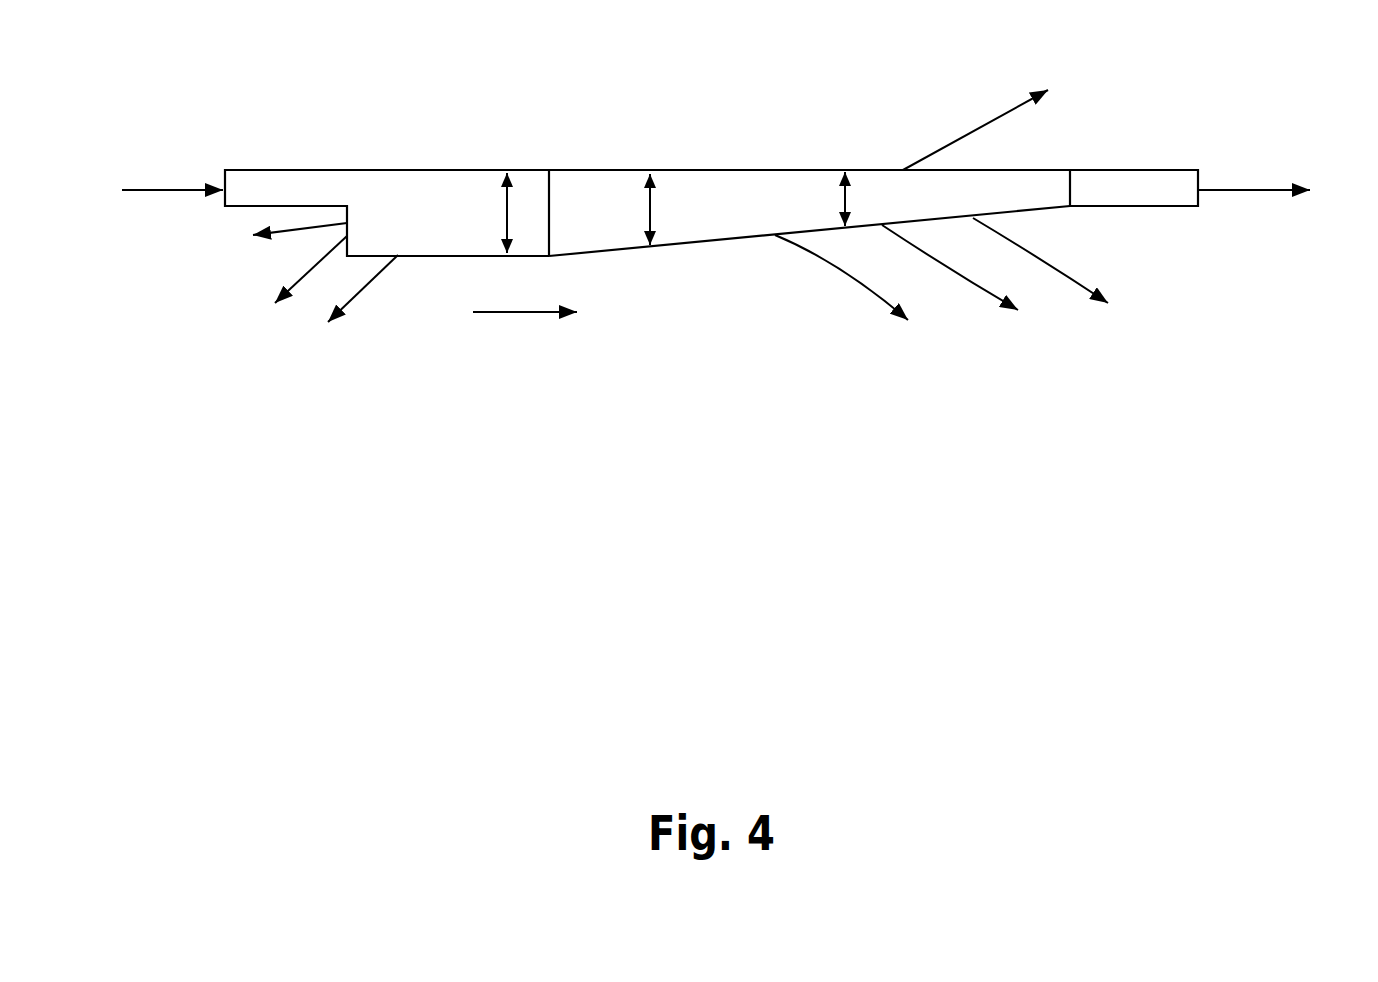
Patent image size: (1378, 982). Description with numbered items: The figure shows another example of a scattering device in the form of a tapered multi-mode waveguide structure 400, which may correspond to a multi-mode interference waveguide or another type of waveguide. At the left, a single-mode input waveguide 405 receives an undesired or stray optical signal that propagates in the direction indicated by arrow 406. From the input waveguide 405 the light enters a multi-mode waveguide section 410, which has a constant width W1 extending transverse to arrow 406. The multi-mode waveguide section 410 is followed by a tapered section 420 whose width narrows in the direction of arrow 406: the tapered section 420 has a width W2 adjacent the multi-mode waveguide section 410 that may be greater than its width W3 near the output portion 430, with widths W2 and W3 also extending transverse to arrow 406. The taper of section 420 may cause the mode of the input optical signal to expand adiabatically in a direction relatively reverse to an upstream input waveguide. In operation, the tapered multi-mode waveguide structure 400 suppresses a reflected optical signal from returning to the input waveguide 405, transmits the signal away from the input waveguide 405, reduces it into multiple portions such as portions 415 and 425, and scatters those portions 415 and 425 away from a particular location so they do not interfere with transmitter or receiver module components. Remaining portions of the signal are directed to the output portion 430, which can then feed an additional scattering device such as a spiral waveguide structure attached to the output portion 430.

The tapered multi-mode waveguide structure 400 is at (671, 148).
The single-mode input waveguide 405 is at (147, 190).
The arrow 406 is at (540, 312).
The multi-mode waveguide section 410 is at (387, 213).
The portion of optical signal 415 is at (313, 285).
The tapered section 420 is at (740, 170).
The portion of optical signal 425 is at (941, 219).
The output portion 430 is at (1279, 190).
The width of multi-mode waveguide section W1 is at (503, 209).
The width of tapered section adjacent section 410 W2 is at (650, 205).
The width of tapered section near output portion W3 is at (840, 202).